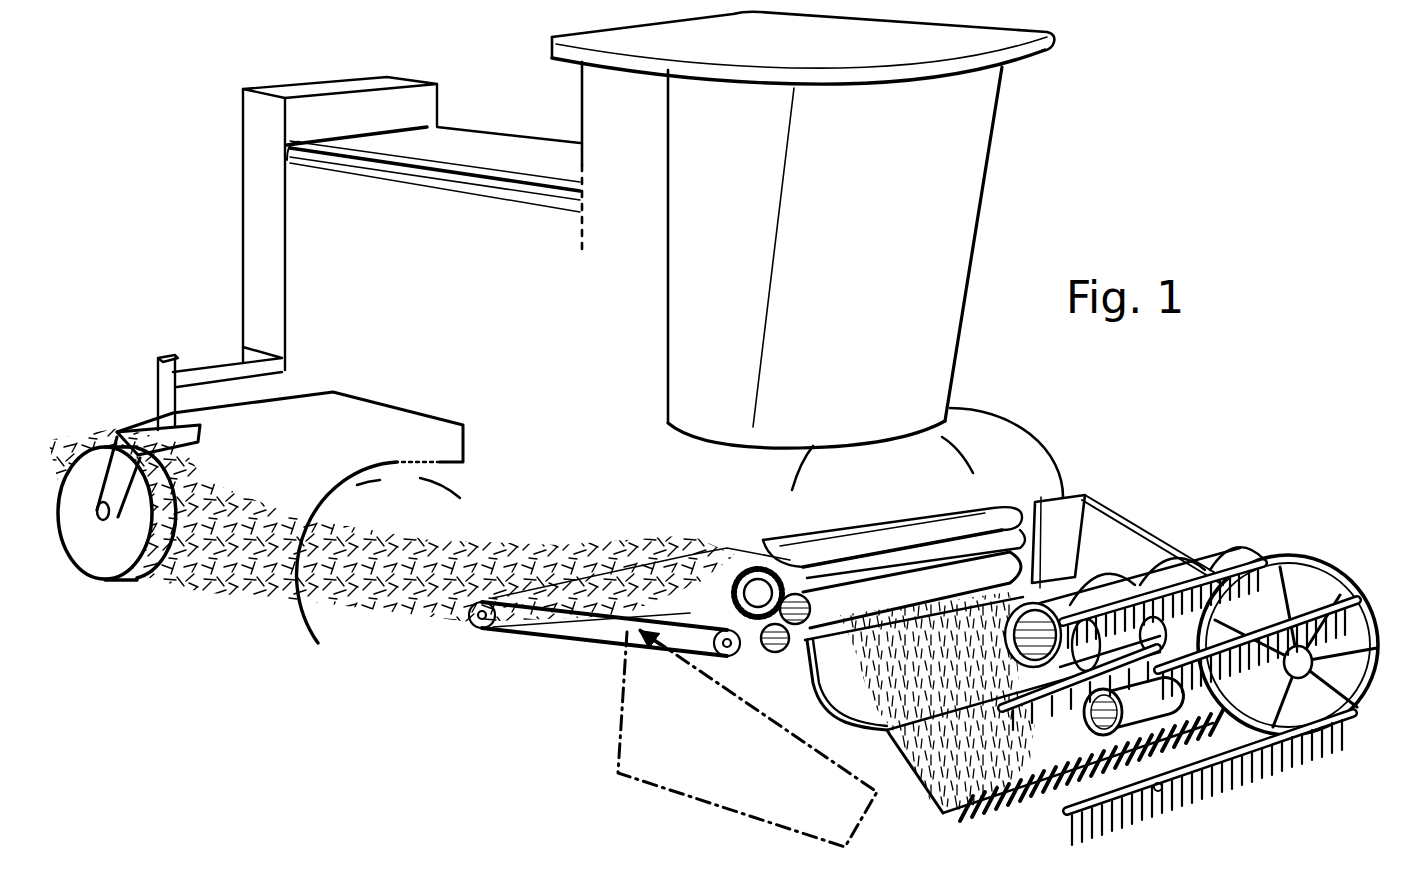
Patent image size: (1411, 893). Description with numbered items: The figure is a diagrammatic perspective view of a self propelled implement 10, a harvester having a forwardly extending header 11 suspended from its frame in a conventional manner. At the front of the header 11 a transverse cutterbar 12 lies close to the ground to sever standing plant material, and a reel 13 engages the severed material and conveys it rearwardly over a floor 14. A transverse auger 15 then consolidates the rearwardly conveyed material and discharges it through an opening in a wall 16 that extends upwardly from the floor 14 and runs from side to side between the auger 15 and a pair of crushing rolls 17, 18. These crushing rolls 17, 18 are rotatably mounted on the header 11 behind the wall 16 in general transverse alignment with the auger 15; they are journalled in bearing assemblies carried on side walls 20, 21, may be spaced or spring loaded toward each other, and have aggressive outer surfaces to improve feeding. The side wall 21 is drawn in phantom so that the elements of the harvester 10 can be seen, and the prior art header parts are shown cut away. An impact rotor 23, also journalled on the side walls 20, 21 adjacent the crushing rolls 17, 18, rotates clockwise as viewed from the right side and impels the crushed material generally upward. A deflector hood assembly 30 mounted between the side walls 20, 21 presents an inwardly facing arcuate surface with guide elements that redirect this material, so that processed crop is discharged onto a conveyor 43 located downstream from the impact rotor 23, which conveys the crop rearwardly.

The self propelled implement 10 is at (1136, 169).
The header 11 is at (1154, 634).
The transverse cutterbar 12 is at (1022, 828).
The reel 13 is at (1288, 550).
The floor 14 is at (923, 783).
The transverse auger 15 is at (1106, 559).
The wall 16 is at (1093, 493).
The crushing roll 17 is at (870, 582).
The crushing roll 18 is at (795, 652).
The side wall 20 is at (1128, 543).
The side wall 21 is at (645, 745).
The impact rotor 23 is at (738, 572).
The deflector hood assembly 30 is at (955, 494).
The conveyor 43 is at (576, 618).